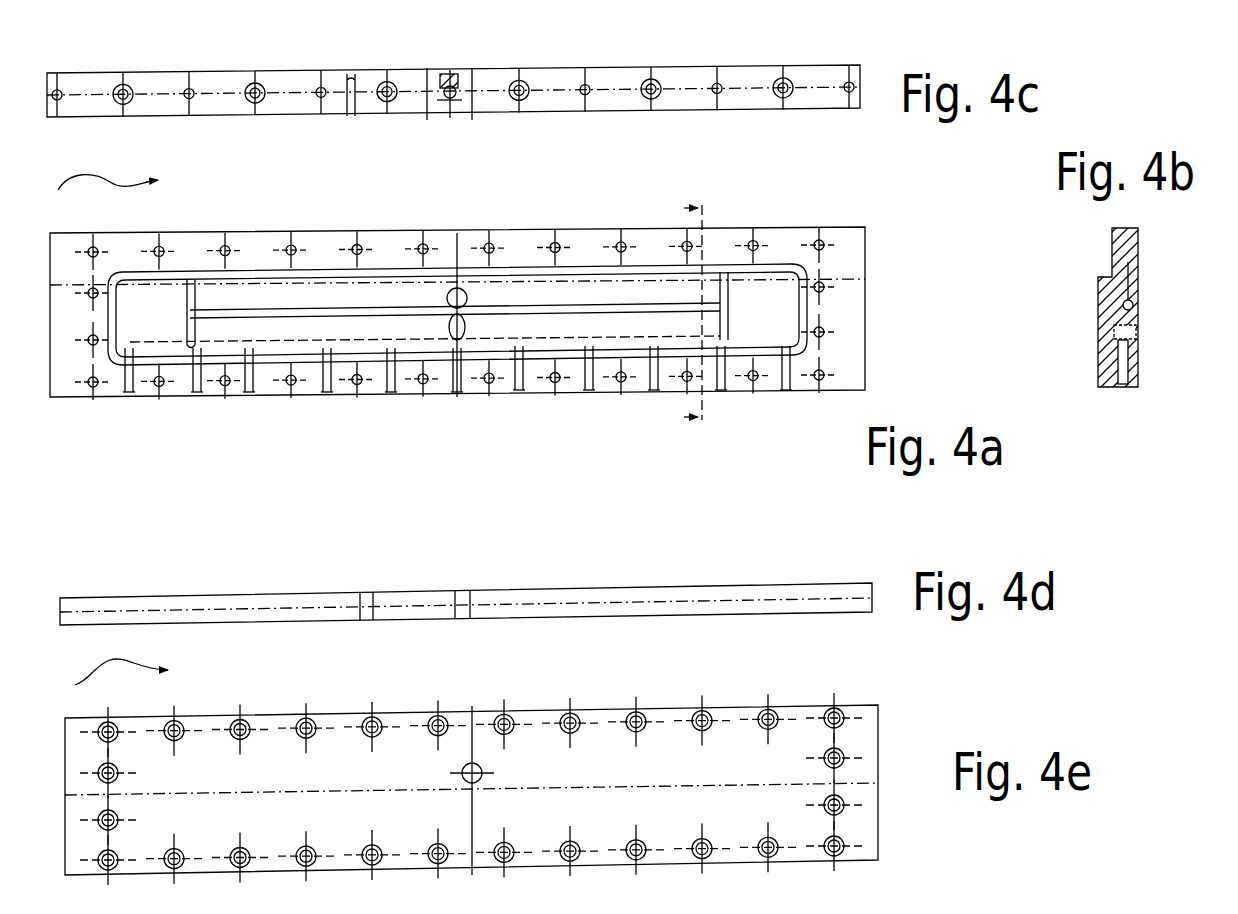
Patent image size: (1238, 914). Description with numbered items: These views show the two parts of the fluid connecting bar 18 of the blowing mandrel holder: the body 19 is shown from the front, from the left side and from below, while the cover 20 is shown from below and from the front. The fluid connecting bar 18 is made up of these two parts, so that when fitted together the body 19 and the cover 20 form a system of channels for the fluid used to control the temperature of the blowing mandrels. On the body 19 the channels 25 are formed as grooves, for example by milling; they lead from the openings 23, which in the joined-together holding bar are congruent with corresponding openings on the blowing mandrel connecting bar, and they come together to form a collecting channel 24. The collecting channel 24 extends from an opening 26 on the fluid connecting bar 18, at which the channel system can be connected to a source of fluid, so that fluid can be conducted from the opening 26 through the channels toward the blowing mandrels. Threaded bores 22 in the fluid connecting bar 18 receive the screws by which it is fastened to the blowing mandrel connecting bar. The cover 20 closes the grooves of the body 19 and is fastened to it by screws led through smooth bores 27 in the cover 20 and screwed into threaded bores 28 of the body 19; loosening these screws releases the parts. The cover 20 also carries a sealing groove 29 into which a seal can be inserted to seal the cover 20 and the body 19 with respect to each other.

In FIG. 4a, the fluid connecting bar 18 is at (89, 192).
In FIG. 4c, the body 19 is at (808, 108).
In FIG. 4a, the body 19 is at (866, 285).
In FIG. 4d, the cover 20 is at (647, 585).
In FIG. 4e, the cover 20 is at (880, 712).
In FIG. 4a, the threaded bores 22 is at (742, 395).
In FIG. 4a, the opening 23 is at (645, 395).
In FIG. 4b, the opening 23 is at (1115, 390).
In FIG. 4c, the collecting channel 24 is at (455, 72).
In FIG. 4a, the collecting channel 24 is at (465, 292).
In FIG. 4b, the collecting channel 24 is at (1133, 305).
In FIG. 4a, the channels 25 is at (248, 345).
In FIG. 4b, the channels 25 is at (1140, 330).
In FIG. 4d, the opening 26 is at (457, 590).
In FIG. 4e, the opening 26 is at (484, 772).
In FIG. 4d, the smooth bores 27 is at (355, 618).
In FIG. 4e, the smooth bores 27 is at (388, 712).
In FIG. 4c, the threaded bores 28 is at (342, 100).
In FIG. 4a, the threaded bores 28 is at (360, 240).
In FIG. 4a, the sealing groove 29 is at (780, 262).
In FIG. 4b, the sealing groove 29 is at (1140, 356).